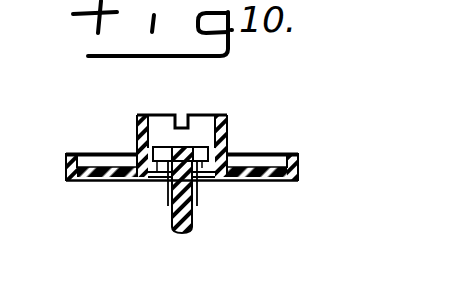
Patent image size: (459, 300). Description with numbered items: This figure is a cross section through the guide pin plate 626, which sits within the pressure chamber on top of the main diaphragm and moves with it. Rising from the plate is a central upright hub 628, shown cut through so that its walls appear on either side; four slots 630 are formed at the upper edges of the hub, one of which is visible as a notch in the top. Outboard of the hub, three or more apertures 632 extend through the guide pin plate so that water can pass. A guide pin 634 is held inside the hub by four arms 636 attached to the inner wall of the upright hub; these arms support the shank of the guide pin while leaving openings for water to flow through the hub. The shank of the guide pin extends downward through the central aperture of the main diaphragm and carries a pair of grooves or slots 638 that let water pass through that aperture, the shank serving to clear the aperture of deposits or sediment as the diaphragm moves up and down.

The guide pin plate 626 is at (298, 168).
The central upright hub 628 is at (225, 143).
The slots 630 is at (180, 114).
The apertures 632 is at (258, 172).
The guide pin 634 is at (182, 236).
The arms 636 is at (150, 180).
The grooves or slots 638 is at (168, 206).